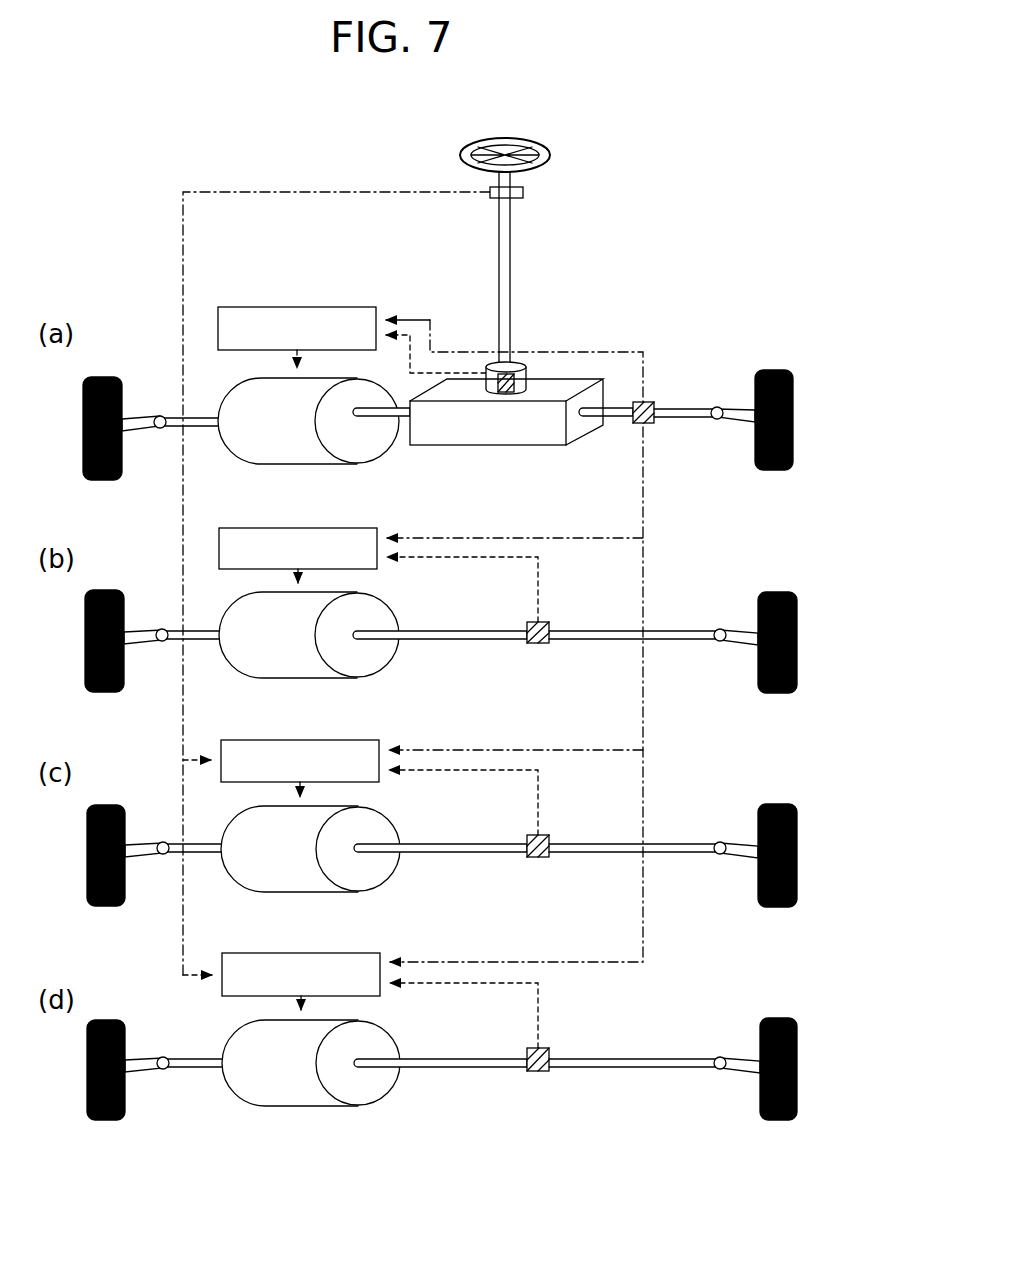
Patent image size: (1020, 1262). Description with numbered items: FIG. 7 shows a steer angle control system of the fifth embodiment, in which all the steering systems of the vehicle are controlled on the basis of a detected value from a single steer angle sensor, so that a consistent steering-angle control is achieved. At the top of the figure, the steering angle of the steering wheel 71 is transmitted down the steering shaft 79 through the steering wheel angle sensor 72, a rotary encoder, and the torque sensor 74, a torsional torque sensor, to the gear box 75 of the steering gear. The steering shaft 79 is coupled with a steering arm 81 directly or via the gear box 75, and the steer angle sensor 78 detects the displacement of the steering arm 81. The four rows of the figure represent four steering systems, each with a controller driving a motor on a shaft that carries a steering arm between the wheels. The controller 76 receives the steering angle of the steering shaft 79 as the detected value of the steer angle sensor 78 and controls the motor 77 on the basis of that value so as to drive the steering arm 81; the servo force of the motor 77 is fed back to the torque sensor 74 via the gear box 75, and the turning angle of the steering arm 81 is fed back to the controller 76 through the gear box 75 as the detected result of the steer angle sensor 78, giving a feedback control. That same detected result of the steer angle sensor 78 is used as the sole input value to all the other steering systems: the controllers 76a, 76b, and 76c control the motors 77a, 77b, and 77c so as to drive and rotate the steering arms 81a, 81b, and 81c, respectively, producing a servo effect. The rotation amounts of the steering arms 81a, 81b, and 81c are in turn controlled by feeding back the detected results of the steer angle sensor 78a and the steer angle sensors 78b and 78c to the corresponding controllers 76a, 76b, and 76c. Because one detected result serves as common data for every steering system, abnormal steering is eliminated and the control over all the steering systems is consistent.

The steering wheel 71 is at (535, 148).
The steering wheel angle sensor 72 is at (523, 192).
The steering shaft 79 is at (510, 283).
The torque sensor 74 is at (527, 383).
The gear box 75 is at (518, 446).
The controller 76 is at (343, 306).
The controller 76a is at (265, 527).
The controller 76b is at (269, 739).
The controller 76c is at (265, 952).
The motor 77 is at (375, 447).
The motor 77a is at (375, 661).
The motor 77b is at (376, 875).
The motor 77c is at (376, 1089).
The steer angle sensor 78 is at (650, 425).
The steer angle sensor 78a is at (540, 645).
The steer angle sensor 78b is at (540, 859).
The steer angle sensor 78c is at (540, 1073).
The steering arm 81 is at (150, 415).
The steering arm 81a is at (154, 628).
The steering arm 81b is at (155, 841).
The steering arm 81c is at (157, 1056).